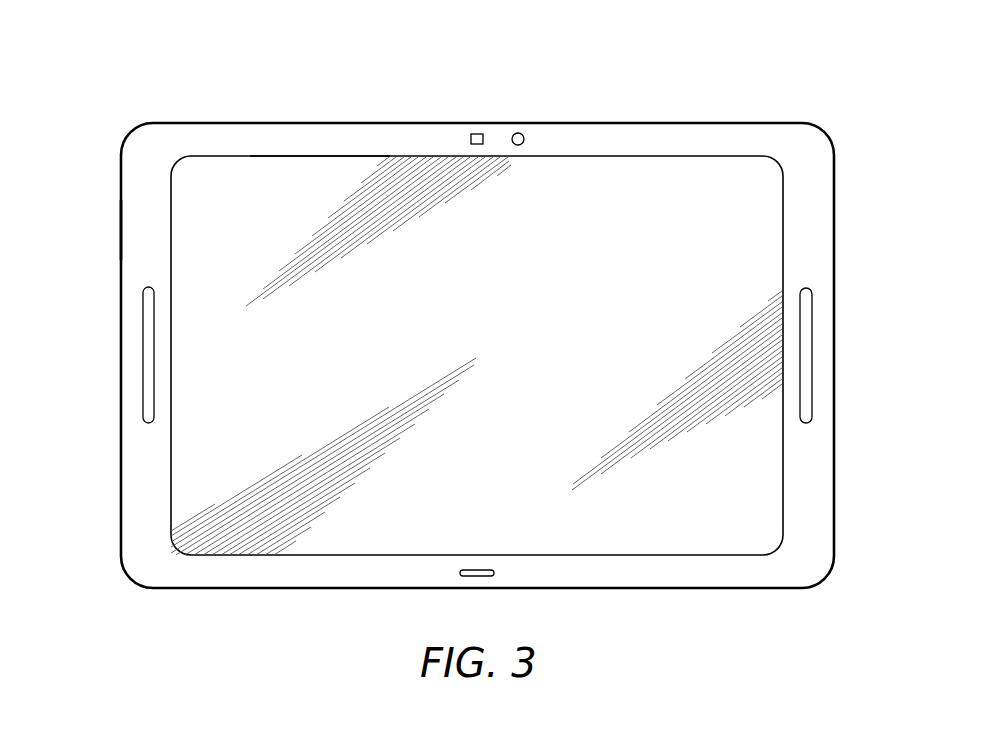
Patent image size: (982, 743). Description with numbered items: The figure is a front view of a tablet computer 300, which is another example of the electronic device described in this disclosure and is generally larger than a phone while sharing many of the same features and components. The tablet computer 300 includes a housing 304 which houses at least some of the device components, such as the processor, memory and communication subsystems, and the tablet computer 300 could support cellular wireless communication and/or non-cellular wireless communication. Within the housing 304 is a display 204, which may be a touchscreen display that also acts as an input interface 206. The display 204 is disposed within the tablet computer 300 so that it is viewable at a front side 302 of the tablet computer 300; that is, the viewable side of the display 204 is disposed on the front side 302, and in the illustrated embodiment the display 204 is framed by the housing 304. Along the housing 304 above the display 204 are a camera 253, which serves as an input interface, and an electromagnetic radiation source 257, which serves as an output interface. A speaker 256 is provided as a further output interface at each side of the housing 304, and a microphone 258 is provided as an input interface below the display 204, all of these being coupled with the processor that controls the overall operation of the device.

The tablet computer 300 is at (761, 106).
The front side 302 is at (132, 455).
The housing 304 is at (121, 222).
The display 204 is at (630, 155).
The input interface 206 is at (320, 155).
The camera 253 is at (477, 133).
The electromagnetic radiation source 257 is at (518, 132).
The speaker 256 is at (143, 353).
The microphone 258 is at (476, 578).